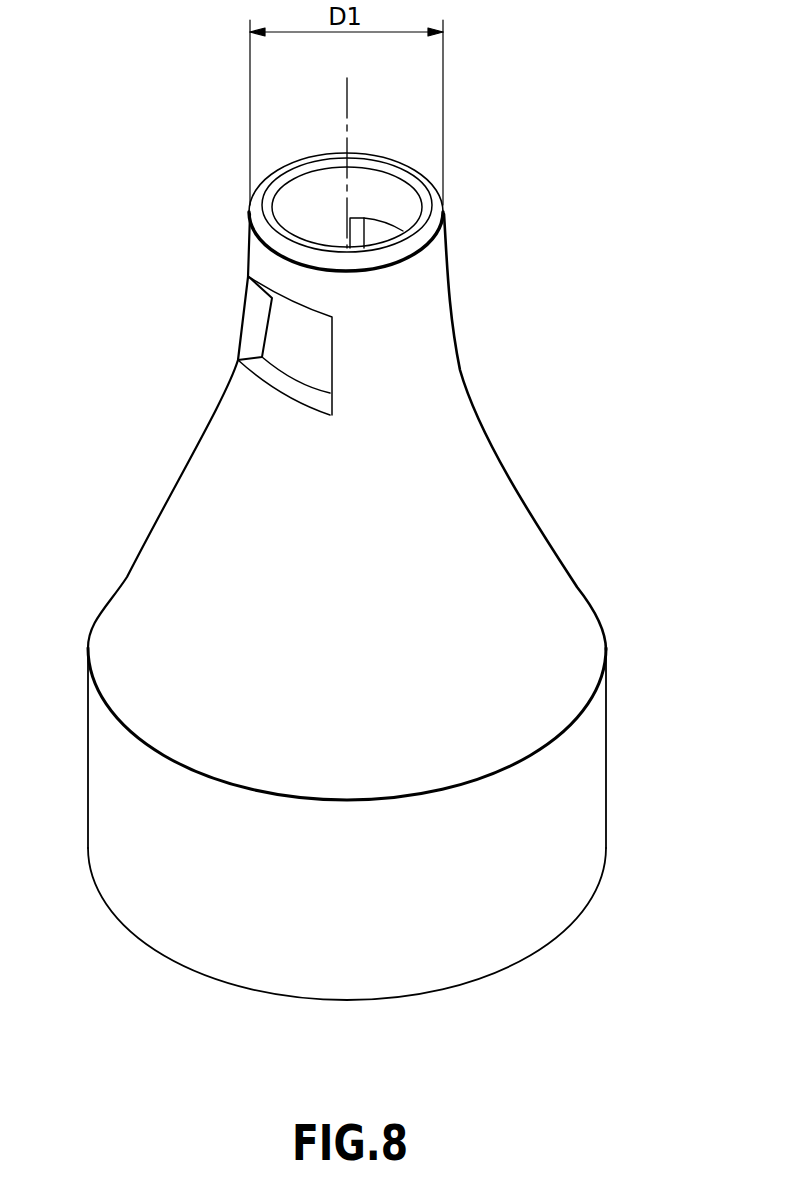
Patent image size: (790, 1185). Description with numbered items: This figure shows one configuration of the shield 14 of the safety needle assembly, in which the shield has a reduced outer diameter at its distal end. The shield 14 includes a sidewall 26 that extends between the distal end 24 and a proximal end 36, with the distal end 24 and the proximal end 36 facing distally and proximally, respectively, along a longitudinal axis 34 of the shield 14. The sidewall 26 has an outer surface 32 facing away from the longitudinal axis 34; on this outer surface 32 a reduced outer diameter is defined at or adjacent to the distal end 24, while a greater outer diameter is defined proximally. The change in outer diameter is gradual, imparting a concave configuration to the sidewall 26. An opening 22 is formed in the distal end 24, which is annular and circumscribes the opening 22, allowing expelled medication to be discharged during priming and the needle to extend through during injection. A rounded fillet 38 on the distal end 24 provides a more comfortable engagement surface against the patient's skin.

The shield 14 is at (510, 395).
The opening 22 is at (325, 219).
The distal end 24 is at (395, 163).
The sidewall 26 is at (197, 429).
The outer surface 32 is at (512, 530).
The longitudinal axis 34 is at (347, 79).
The proximal end 36 is at (552, 943).
The rounded fillet 38 is at (293, 165).